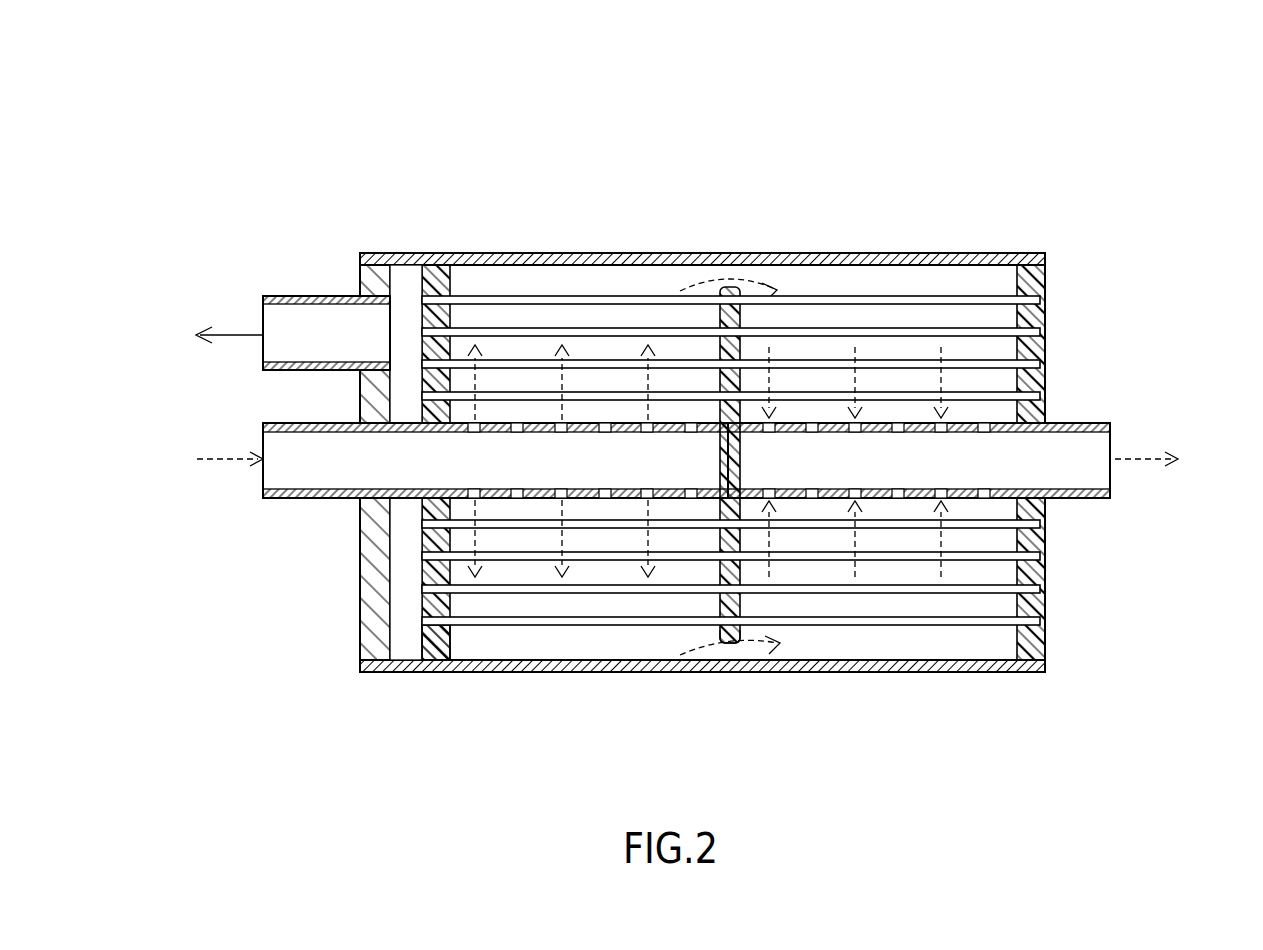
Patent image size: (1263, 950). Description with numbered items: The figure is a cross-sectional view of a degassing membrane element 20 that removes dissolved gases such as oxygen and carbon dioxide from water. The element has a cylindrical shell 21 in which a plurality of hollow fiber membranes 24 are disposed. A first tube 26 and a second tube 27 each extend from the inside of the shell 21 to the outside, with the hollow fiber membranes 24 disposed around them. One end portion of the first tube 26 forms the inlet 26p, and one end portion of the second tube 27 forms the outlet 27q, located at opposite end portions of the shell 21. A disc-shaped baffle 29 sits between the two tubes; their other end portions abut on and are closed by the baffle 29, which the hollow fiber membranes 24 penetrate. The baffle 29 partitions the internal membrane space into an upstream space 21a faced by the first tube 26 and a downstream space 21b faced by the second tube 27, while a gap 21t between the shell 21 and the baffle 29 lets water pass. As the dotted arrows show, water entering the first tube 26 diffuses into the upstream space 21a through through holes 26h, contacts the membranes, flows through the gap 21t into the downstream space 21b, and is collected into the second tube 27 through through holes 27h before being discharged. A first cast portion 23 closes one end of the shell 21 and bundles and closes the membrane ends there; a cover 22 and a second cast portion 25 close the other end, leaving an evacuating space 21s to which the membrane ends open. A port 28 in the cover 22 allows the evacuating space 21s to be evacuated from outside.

The degassing membrane element 20 is at (1032, 88).
The shell 21 is at (985, 257).
The upstream space 21a is at (465, 256).
The downstream space 21b is at (977, 645).
The evacuating space 21s is at (403, 256).
The gap 21t is at (728, 286).
The cover 22 is at (372, 640).
The first cast portion 23 is at (1030, 275).
The hollow fiber membranes 24 is at (585, 333).
The second cast portion 25 is at (437, 662).
The first tube 26 is at (310, 498).
The inlet 26p is at (263, 447).
The through holes 26h is at (517, 420).
The second tube 27 is at (1082, 420).
The outlet 27q is at (1112, 472).
The through holes 27h is at (812, 420).
The port 28 is at (290, 297).
The baffle 29 is at (728, 645).